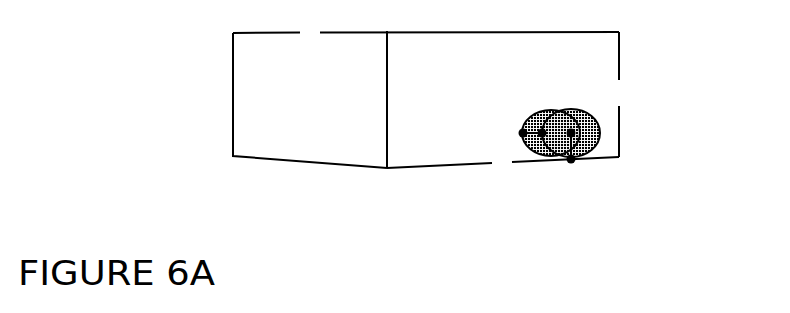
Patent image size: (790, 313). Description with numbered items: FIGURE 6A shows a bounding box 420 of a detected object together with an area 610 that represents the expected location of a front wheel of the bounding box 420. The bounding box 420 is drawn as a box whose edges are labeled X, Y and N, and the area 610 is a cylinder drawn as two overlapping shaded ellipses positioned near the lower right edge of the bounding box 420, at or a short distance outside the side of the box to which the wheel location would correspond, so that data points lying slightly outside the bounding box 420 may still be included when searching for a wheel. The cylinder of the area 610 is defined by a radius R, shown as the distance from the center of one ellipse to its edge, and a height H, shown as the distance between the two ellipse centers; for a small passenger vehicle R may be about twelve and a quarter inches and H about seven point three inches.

The bounding box 420 is at (487, 97).
The area 610 is at (562, 106).
The X axis edge X is at (426, 31).
The Y axis edge Y is at (503, 163).
The normal edge N is at (617, 94).
The height H is at (528, 120).
The radius R is at (600, 138).